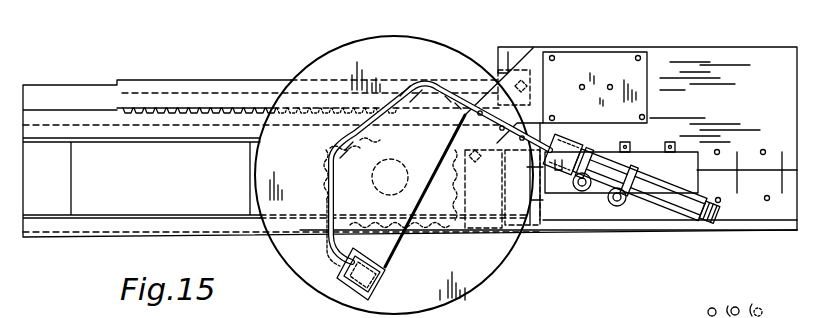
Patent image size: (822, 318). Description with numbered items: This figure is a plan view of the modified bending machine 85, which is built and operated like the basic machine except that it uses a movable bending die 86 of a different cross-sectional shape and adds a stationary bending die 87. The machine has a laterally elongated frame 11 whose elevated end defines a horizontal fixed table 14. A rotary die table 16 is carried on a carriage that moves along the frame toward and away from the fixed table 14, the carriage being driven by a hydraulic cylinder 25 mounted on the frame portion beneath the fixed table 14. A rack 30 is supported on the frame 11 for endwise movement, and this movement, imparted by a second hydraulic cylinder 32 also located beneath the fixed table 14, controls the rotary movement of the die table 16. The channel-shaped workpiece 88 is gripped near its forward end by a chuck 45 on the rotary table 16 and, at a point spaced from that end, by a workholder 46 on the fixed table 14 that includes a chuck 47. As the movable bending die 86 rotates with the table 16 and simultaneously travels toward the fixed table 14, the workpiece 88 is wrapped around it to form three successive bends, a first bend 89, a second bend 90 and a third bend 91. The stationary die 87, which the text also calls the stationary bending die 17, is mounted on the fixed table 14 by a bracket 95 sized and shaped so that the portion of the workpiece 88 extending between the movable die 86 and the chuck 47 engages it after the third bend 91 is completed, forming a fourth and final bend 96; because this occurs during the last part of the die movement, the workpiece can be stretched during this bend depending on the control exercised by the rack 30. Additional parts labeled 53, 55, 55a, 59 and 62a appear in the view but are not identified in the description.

The frame 11 is at (642, 232).
The fixed table 14 is at (758, 55).
The rotary die table 16 is at (354, 58).
The stationary bending die 17 is at (520, 97).
The hydraulic cylinder 25 is at (545, 190).
The rack 30 is at (213, 112).
The hydraulic cylinder 32 is at (533, 102).
The chuck 45 is at (345, 288).
The workholder 46 is at (606, 156).
The chuck 47 is at (560, 155).
The bracket 53 is at (596, 312).
The roller 55 is at (733, 301).
The roller 55a is at (752, 300).
The link 59 is at (480, 312).
The link arm 62a is at (287, 311).
The modified bending machine 85 is at (688, 47).
The movable bending die 86 is at (390, 127).
The stationary bending die 87 is at (526, 122).
The workpiece 88 is at (326, 176).
The first bend 89 is at (329, 258).
The second bend 90 is at (330, 152).
The third bend 91 is at (436, 80).
The bracket 95 is at (583, 52).
The fourth bend 96 is at (490, 160).